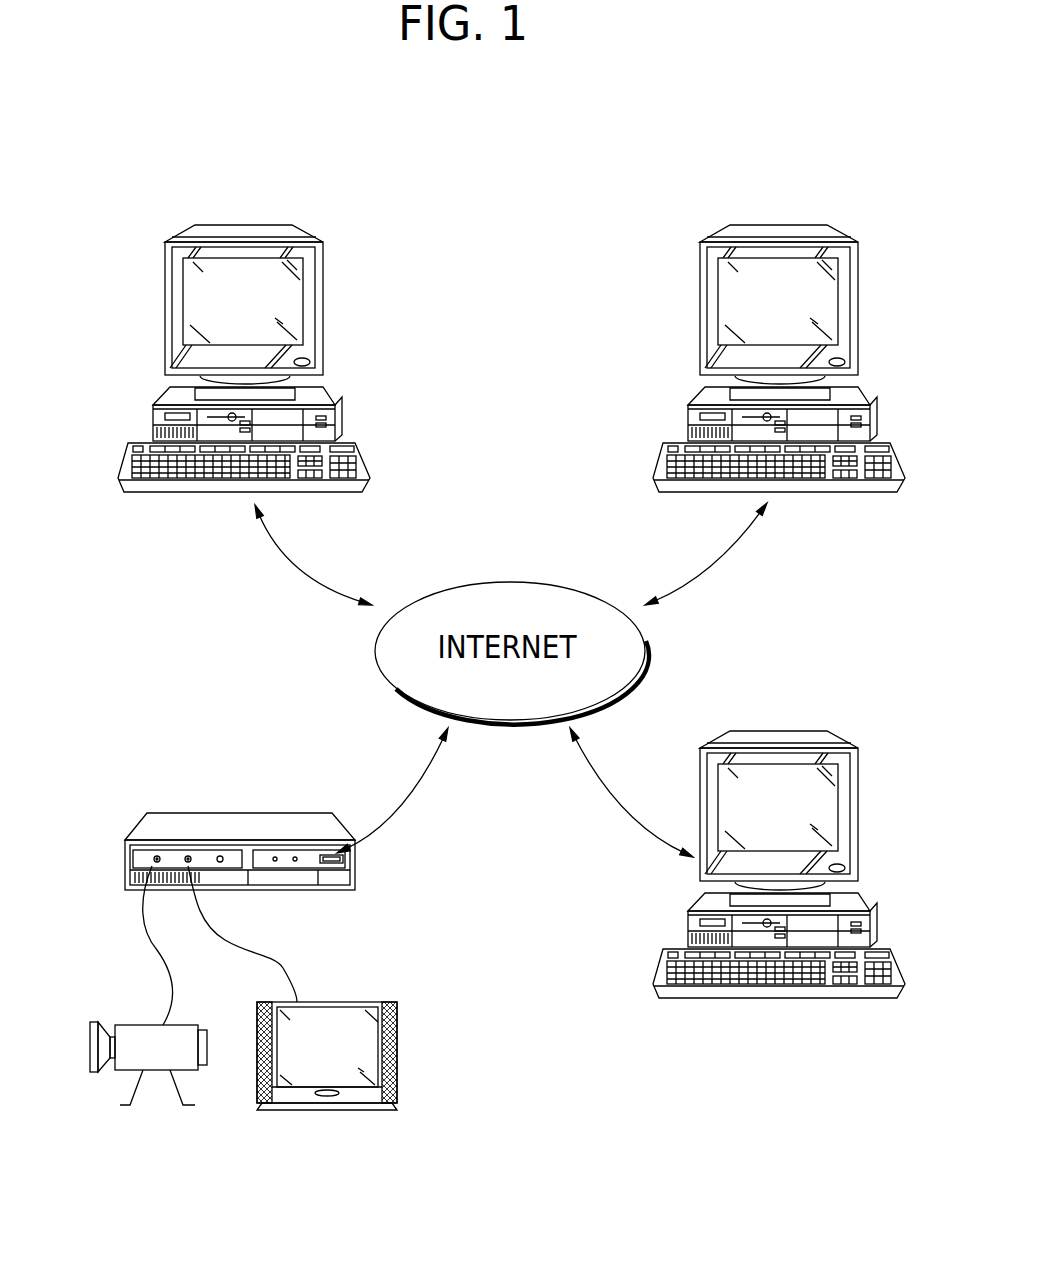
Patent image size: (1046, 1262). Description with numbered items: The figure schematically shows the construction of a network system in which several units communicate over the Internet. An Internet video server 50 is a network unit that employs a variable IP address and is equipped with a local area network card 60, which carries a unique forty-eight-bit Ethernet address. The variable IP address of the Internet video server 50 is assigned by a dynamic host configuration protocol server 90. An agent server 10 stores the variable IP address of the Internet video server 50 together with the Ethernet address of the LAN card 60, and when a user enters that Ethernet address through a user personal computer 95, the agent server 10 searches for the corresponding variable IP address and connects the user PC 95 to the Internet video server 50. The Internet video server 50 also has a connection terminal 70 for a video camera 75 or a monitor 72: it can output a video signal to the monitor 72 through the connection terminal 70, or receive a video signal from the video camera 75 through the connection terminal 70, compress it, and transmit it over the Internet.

The dynamic host configuration protocol (DHCP) server 90 is at (347, 285).
The agent server 10 is at (882, 285).
The user personal computer (PC) 95 is at (882, 791).
The Internet video server 50 is at (253, 961).
The local area network (LAN) card 60 is at (242, 851).
The connection terminal 70 is at (142, 858).
The video camera 75 is at (90, 1042).
The monitor 72 is at (397, 1058).